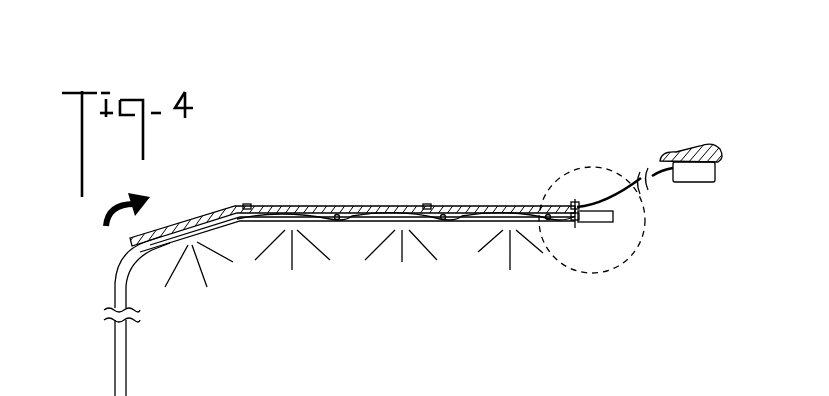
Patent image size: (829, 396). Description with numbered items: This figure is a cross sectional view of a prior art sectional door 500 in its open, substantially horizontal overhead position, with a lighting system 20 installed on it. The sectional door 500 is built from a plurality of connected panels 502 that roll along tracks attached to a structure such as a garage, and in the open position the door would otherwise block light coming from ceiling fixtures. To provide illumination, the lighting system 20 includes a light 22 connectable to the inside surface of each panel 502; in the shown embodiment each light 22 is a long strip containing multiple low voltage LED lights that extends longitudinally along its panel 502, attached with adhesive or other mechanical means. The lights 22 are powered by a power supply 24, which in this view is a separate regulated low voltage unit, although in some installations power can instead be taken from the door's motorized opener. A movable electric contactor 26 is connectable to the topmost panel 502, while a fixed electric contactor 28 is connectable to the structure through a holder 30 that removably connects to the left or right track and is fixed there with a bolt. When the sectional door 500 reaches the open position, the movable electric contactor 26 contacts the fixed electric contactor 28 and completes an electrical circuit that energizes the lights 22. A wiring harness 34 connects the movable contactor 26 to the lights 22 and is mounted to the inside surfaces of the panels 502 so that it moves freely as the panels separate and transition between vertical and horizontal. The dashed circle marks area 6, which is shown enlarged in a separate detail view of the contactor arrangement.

The sectional door 500 is at (356, 186).
The panel 502 is at (335, 178).
The light 22 is at (184, 226).
The wiring harness 34 is at (406, 236).
The movable electric contactor 26 is at (574, 205).
The area 6 is at (582, 168).
The lighting system 20 is at (612, 151).
The fixed electric contactor 28 is at (580, 207).
The holder 30 is at (578, 222).
The power supply 24 is at (687, 177).